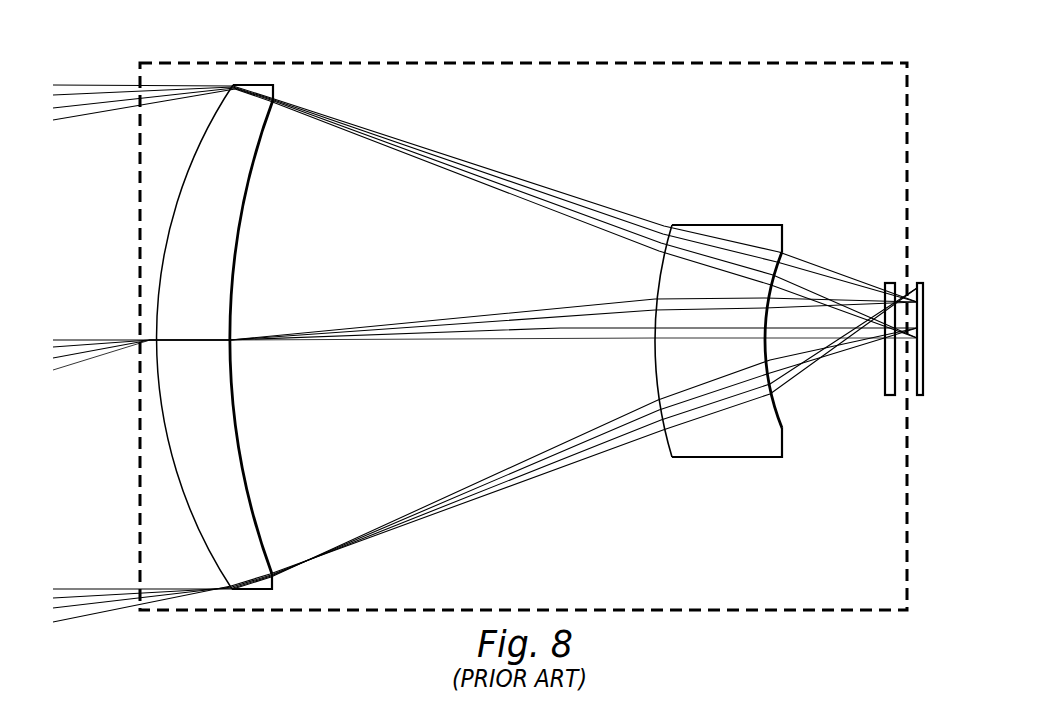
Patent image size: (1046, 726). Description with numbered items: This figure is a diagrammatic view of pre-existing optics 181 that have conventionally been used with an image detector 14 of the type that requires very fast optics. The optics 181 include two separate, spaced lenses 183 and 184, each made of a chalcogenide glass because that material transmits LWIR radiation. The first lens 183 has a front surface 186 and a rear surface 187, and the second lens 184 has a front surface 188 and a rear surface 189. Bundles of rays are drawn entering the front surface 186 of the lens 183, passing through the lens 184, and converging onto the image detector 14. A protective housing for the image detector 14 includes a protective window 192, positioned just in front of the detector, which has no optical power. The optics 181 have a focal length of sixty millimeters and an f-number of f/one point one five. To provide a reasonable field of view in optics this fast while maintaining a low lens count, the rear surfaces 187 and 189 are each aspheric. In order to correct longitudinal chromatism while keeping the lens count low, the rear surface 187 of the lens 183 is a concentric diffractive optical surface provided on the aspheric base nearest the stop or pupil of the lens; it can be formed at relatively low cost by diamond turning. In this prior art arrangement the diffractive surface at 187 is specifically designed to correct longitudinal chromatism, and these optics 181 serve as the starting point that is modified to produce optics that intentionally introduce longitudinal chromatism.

The optics 181 is at (752, 156).
The lens 183 is at (232, 337).
The front surface 186 is at (184, 497).
The rear surface 187 is at (236, 449).
The lens 184 is at (702, 359).
The front surface 188 is at (660, 282).
The rear surface 189 is at (780, 407).
The protective window 192 is at (890, 398).
The image detector 14 is at (917, 398).